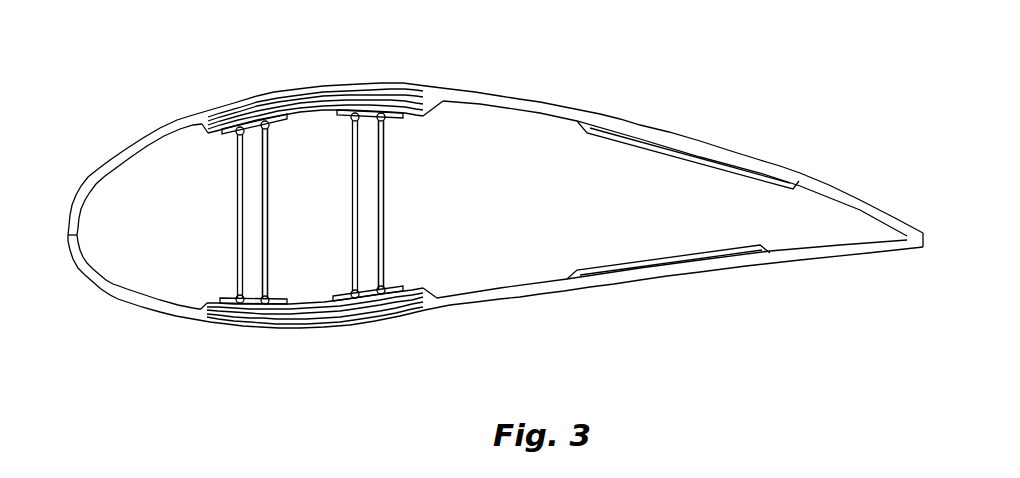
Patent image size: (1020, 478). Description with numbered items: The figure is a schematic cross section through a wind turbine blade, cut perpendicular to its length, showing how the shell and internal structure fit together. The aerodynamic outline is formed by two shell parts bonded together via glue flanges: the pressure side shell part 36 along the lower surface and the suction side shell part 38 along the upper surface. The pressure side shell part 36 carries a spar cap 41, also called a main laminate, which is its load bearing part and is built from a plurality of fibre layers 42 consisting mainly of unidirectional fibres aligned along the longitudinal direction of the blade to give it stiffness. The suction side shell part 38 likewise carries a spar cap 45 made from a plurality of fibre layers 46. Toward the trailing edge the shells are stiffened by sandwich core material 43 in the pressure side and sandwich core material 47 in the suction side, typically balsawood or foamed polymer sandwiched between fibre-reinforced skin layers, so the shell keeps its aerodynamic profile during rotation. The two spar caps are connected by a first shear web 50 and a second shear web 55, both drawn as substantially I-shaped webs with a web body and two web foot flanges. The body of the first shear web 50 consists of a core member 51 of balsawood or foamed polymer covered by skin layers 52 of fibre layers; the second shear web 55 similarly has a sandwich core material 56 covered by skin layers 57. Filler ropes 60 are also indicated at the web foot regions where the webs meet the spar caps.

The pressure side shell part 36 is at (548, 303).
The suction side shell part 38 is at (534, 96).
The spar cap 41 is at (393, 322).
The fibre layers 42 is at (332, 322).
The sandwich core material 43 is at (683, 264).
The spar cap 45 is at (283, 88).
The fibre layers 46 is at (386, 105).
The sandwich core material 47 is at (681, 142).
The first shear web 50 is at (272, 198).
The core member 51 is at (262, 230).
The skin layers 52 is at (268, 160).
The second shear web 55 is at (392, 195).
The sandwich core material of second shear web 56 is at (383, 225).
The skin layers of second shear web 57 is at (384, 177).
The filler ropes 60 is at (242, 296).